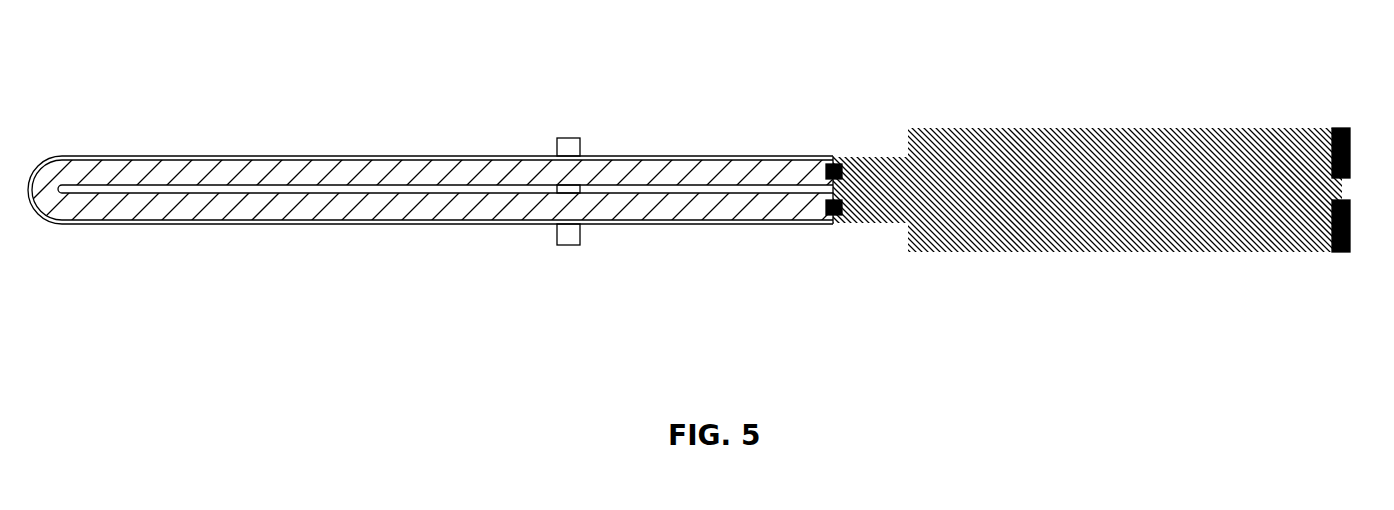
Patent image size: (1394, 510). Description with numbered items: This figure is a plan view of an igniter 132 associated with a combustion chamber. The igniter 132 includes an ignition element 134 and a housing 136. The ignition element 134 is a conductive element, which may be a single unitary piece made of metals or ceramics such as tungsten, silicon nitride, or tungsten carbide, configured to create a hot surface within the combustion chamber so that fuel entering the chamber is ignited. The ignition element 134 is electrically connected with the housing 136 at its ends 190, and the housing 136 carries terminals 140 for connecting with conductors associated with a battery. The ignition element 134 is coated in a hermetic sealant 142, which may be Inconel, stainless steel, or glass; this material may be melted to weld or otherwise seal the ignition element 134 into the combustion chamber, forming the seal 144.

The igniter 132 is at (828, 149).
The ignition element 134 is at (445, 161).
The housing 136 is at (990, 157).
The terminals 140 is at (1340, 128).
The hermetic sealant 142 is at (272, 157).
The seal 144 is at (568, 138).
The ends 190 is at (838, 165).